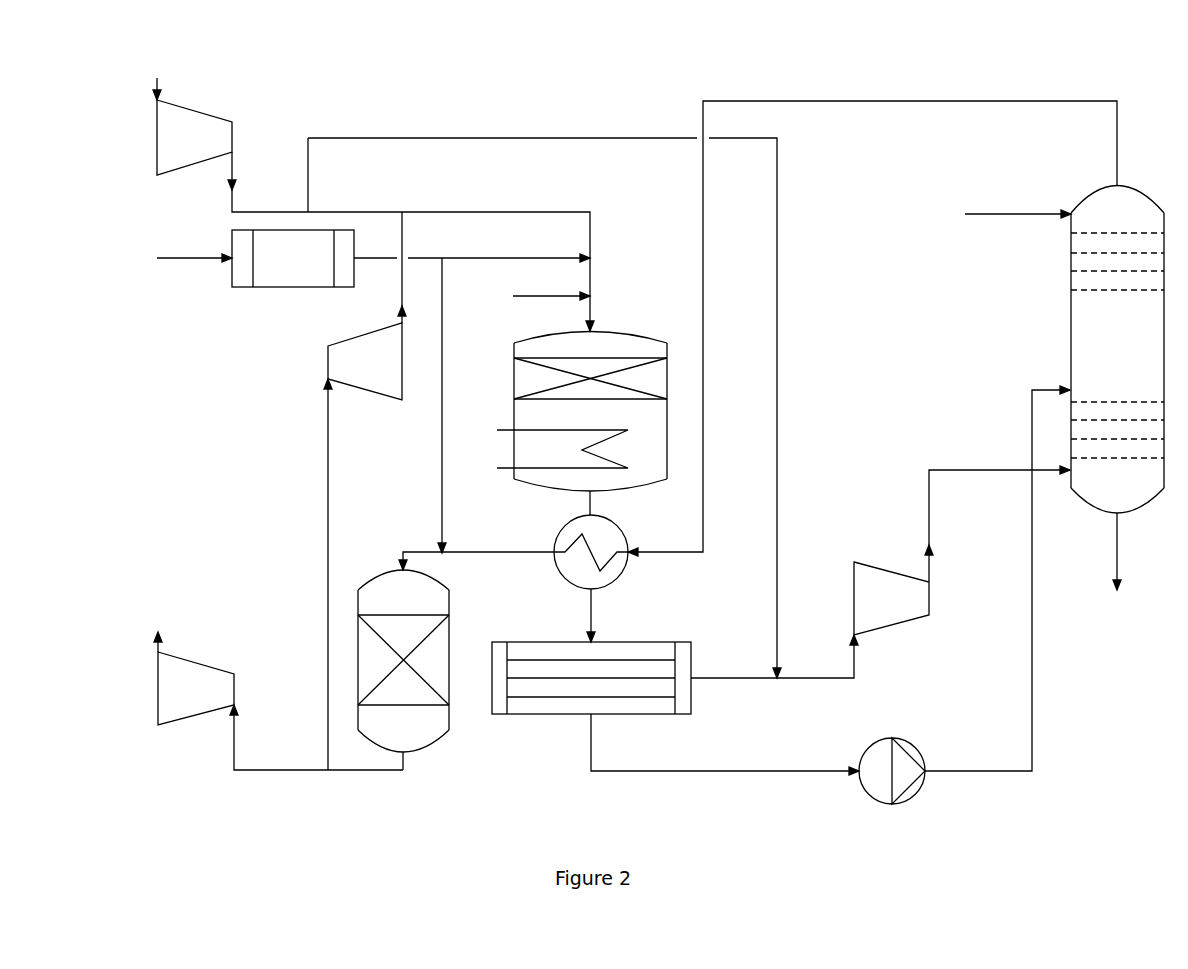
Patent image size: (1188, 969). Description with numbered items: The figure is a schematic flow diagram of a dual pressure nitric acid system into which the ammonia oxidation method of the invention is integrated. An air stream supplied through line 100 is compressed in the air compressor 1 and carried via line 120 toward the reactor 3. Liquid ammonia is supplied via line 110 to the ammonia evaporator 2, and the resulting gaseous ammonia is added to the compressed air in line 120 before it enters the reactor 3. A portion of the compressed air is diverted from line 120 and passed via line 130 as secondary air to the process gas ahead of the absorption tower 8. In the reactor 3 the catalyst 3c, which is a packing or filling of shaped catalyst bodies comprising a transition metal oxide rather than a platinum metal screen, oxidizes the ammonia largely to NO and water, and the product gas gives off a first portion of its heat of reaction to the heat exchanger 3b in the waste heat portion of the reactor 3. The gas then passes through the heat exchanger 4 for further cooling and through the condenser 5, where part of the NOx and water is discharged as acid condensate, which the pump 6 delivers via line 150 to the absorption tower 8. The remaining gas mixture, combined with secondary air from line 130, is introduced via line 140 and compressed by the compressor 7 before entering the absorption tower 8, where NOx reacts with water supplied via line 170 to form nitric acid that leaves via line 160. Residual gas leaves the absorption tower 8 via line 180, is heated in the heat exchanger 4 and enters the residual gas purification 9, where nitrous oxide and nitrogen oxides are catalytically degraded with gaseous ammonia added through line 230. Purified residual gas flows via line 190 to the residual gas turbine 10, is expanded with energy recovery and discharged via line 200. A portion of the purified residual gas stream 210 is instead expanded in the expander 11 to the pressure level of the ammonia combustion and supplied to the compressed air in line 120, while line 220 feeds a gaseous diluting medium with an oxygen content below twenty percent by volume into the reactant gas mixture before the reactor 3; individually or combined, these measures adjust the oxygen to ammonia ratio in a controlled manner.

The air compressor 1 is at (375, 215).
The ammonia evaporator 2 is at (411, 258).
The reactor 3 is at (568, 424).
The heat exchanger 3b is at (549, 453).
The catalyst 3c is at (590, 378).
The heat exchanger 4 is at (513, 578).
The condenser 5 is at (591, 678).
The pump 6 is at (964, 595).
The compressor 7 is at (962, 550).
The absorption tower 8 is at (1117, 350).
The residual gas purification 9 is at (403, 670).
The residual gas turbine 10 is at (196, 688).
The expander 11 is at (367, 306).
The line 100 is at (157, 78).
The line 110 is at (194, 245).
The line 120 is at (388, 175).
The line 130 is at (544, 393).
The line 140 is at (774, 656).
The line 150 is at (725, 757).
The line 160 is at (1118, 564).
The line 170 is at (995, 213).
The line 180 is at (872, 313).
The line 190 is at (316, 753).
The line 200 is at (160, 624).
The purified residual gas stream 210 is at (306, 574).
The line 220 is at (528, 296).
The line 230 is at (421, 405).